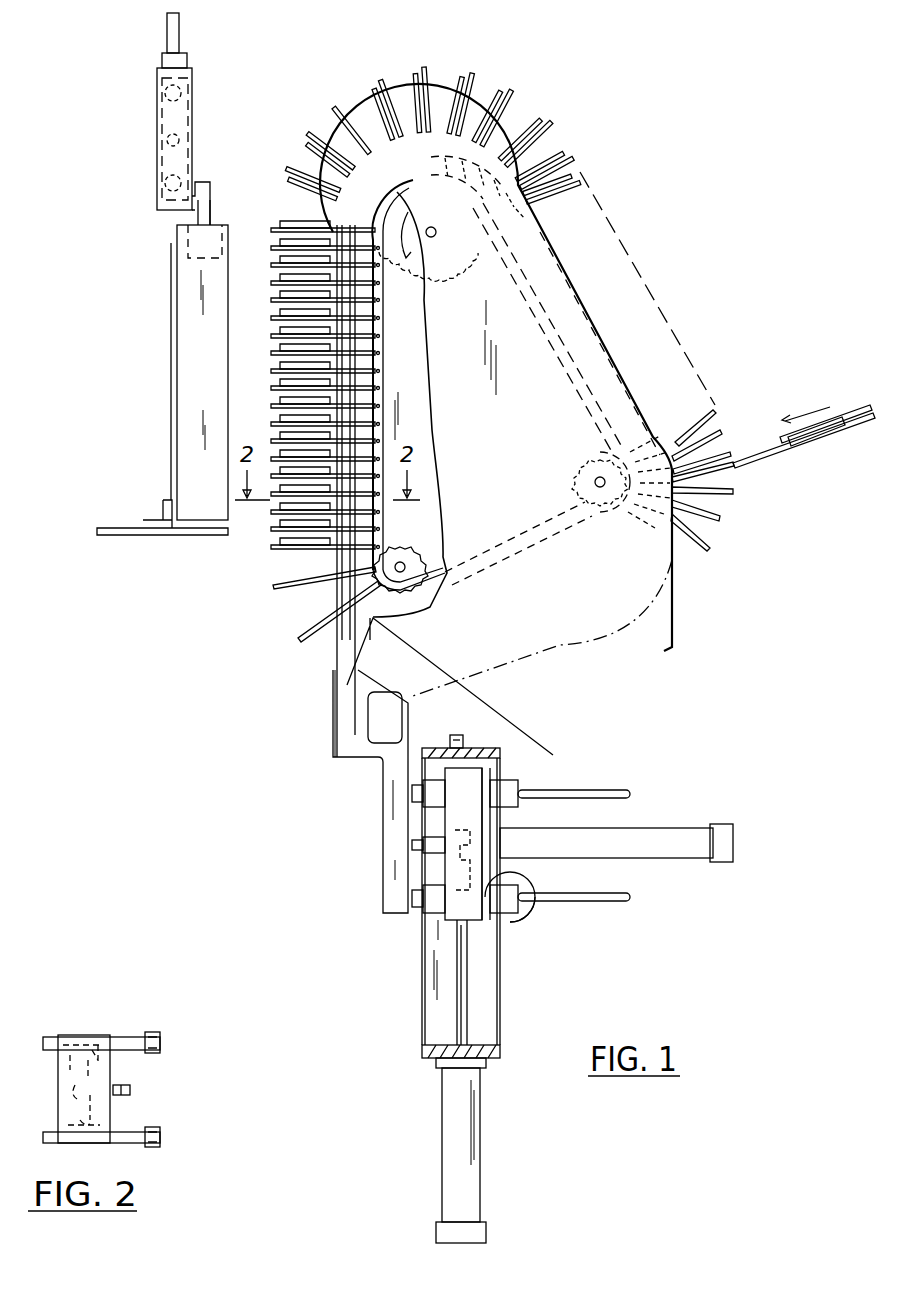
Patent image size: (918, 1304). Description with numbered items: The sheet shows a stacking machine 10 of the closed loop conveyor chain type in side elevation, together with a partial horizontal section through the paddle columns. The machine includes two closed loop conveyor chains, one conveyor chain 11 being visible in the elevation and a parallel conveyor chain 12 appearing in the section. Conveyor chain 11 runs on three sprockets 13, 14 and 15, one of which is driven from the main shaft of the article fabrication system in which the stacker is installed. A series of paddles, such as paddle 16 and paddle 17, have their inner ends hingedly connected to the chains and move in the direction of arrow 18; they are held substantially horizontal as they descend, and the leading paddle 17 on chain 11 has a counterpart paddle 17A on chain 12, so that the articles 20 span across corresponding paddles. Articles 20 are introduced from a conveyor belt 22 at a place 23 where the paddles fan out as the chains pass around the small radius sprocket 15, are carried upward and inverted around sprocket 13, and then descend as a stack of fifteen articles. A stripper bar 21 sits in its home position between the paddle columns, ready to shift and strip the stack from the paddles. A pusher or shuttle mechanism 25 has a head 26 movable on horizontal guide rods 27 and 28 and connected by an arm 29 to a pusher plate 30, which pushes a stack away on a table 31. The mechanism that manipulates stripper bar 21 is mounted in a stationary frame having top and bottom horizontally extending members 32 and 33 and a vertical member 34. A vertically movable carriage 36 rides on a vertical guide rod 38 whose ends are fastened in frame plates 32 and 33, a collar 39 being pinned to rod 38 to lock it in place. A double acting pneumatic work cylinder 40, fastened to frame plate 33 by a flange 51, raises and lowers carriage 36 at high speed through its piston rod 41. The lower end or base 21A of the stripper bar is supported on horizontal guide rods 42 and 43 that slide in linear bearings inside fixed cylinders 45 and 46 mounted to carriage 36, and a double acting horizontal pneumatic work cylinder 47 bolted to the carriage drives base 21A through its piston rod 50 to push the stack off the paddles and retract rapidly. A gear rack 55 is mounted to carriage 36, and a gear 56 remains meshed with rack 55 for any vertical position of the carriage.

In FIG. 1, the stacking machine 10 is at (730, 301).
In FIG. 1, the conveyor chain 11 is at (388, 345).
In FIG. 2, the conveyor chain 11 is at (158, 1130).
In FIG. 2, the conveyor chain 12 is at (155, 1035).
In FIG. 1, the sprocket 13 is at (422, 303).
In FIG. 1, the sprocket 14 is at (430, 524).
In FIG. 1, the sprocket 15 is at (578, 470).
In FIG. 1, the paddle 16 is at (276, 268).
In FIG. 1, the paddle 17 is at (272, 522).
In FIG. 2, the paddle 17 is at (128, 1144).
In FIG. 2, the paddle 17A is at (118, 1033).
In FIG. 1, the arrow 18 is at (371, 69).
In FIG. 1, the articles 20 is at (277, 232).
In FIG. 2, the articles 20 is at (112, 1072).
In FIG. 1, the stripper bar 21 is at (388, 391).
In FIG. 2, the stripper bar 21 is at (130, 1092).
In FIG. 1, the stripper bar base 21A is at (383, 828).
In FIG. 1, the conveyor belt 22 is at (800, 440).
In FIG. 1, the loading place 23 is at (753, 474).
In FIG. 1, the pusher or shuttle mechanism 25 is at (213, 109).
In FIG. 1, the shuttle head 26 is at (190, 78).
In FIG. 1, the horizontal guide rod 27 is at (166, 95).
In FIG. 1, the horizontal guide rod 28 is at (166, 185).
In FIG. 1, the arm 29 is at (209, 188).
In FIG. 1, the pusher plate 30 is at (190, 292).
In FIG. 1, the table 31 is at (132, 535).
In FIG. 1, the top frame member 32 is at (505, 748).
In FIG. 1, the bottom frame member 33 is at (505, 1052).
In FIG. 1, the vertical frame member 34 is at (500, 1008).
In FIG. 1, the vertically movable carriage 36 is at (466, 784).
In FIG. 1, the vertical guide rod 38 is at (470, 972).
In FIG. 1, the collar 39 is at (463, 742).
In FIG. 1, the pneumatic work cylinder 40 is at (478, 1140).
In FIG. 1, the piston rod 41 is at (455, 1003).
In FIG. 1, the horizontal guide rod 42 is at (624, 790).
In FIG. 1, the horizontal guide rod 43 is at (616, 902).
In FIG. 1, the fixed cylinder 45 is at (518, 790).
In FIG. 1, the fixed cylinder 46 is at (515, 912).
In FIG. 1, the horizontal pneumatic work cylinder 47 is at (666, 824).
In FIG. 1, the piston rod 50 is at (450, 845).
In FIG. 1, the flange 51 is at (486, 1065).
In FIG. 1, the gear rack 55 is at (500, 828).
In FIG. 1, the gear 56 is at (528, 882).